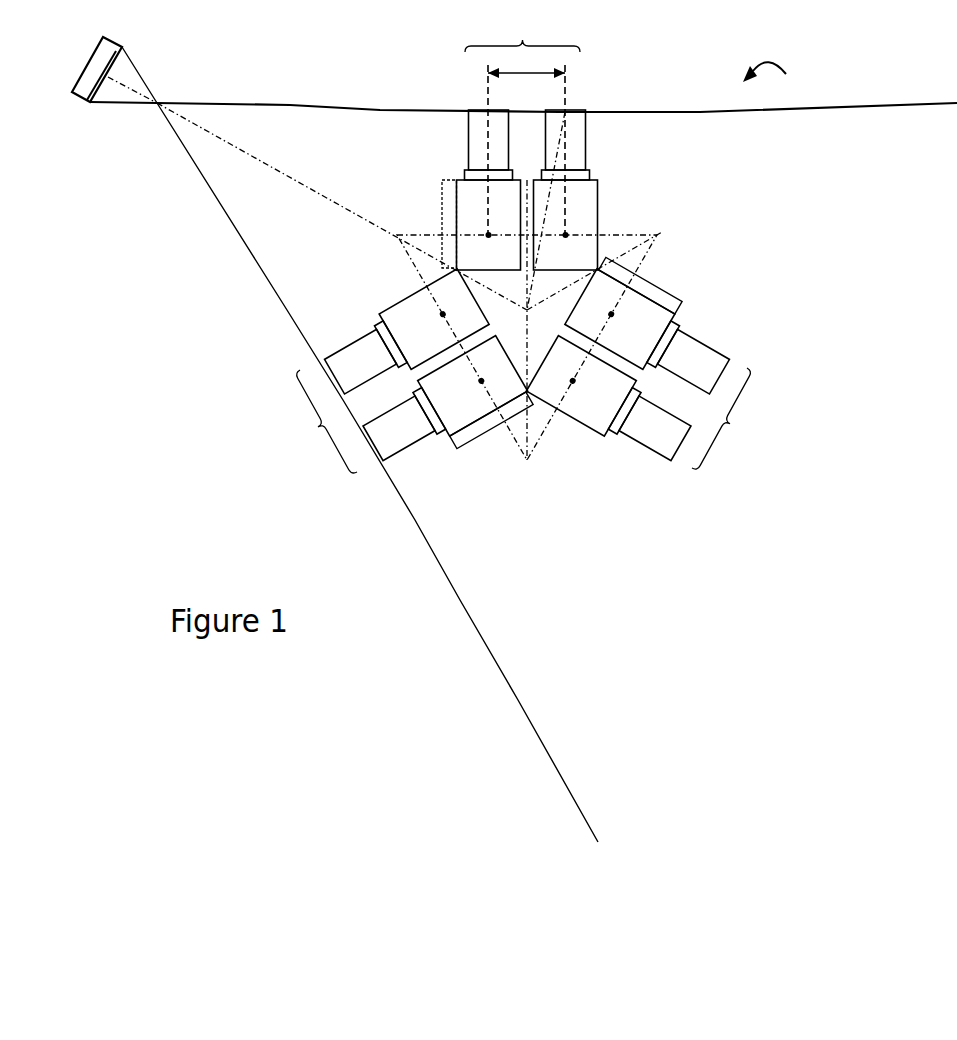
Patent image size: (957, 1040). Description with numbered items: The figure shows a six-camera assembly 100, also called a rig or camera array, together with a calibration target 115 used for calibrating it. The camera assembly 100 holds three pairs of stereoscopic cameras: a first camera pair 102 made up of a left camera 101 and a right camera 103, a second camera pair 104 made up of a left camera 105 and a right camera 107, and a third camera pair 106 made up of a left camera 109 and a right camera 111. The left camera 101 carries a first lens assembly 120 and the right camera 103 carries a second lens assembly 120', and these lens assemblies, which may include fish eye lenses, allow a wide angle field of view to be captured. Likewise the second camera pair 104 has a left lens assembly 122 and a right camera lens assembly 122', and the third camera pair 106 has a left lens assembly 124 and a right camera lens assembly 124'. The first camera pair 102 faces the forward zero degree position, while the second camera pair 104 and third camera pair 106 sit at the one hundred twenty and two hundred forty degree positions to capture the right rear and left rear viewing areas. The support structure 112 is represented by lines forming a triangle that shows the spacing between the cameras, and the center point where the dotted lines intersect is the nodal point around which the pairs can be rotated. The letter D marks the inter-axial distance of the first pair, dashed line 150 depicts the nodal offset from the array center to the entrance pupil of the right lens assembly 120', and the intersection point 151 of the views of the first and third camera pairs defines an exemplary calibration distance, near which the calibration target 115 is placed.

The camera assembly 100 is at (775, 77).
The left camera 101 is at (465, 190).
The first camera pair 102 is at (522, 127).
The right camera 103 is at (578, 197).
The second camera pair 104 is at (721, 418).
The left camera 105 is at (653, 312).
The third camera pair 106 is at (322, 421).
The right camera 107 is at (597, 418).
The left camera 109 is at (443, 418).
The right camera 111 is at (402, 313).
The triangular baseline arrangement 112 is at (632, 237).
The calibration target 115 is at (90, 77).
The first lens assembly 120 is at (467, 145).
The second lens assembly 120' is at (586, 145).
The left lens assembly 122 is at (703, 359).
The right camera lens assembly 122' is at (650, 441).
The left lens assembly 124 is at (399, 443).
The right camera lens assembly 124' is at (354, 354).
The dashed line 150 is at (552, 158).
The intersection point 151 is at (160, 98).